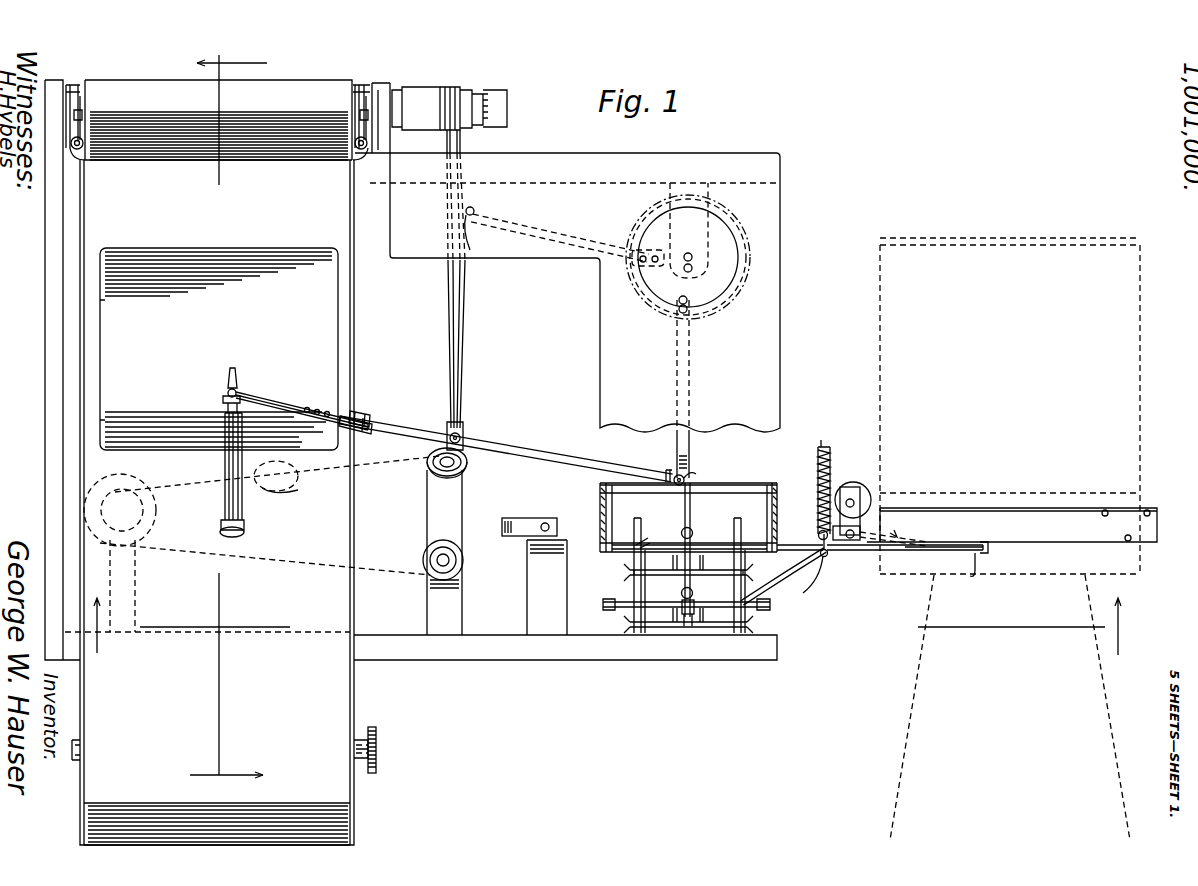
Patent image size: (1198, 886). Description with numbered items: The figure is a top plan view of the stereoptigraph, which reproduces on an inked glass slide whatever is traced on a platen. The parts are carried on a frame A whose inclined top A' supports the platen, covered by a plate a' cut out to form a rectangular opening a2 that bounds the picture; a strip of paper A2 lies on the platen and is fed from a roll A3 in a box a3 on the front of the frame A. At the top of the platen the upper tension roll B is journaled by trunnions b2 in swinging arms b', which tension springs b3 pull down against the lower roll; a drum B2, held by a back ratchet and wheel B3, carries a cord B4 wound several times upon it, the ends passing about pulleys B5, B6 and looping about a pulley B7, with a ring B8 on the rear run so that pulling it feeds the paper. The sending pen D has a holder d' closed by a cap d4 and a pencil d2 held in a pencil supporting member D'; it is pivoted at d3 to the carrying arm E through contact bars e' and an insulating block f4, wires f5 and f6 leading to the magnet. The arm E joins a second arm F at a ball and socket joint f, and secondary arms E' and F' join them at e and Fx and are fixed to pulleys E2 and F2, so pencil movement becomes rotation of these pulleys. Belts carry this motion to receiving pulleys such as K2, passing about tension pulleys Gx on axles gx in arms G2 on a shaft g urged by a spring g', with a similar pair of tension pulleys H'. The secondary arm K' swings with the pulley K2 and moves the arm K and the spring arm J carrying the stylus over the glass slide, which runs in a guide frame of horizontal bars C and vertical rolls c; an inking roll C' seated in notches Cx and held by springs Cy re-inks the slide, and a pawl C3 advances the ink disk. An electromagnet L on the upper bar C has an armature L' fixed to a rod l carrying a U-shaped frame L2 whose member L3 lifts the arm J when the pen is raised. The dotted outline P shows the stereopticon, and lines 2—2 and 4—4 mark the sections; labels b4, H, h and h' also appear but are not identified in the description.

The frame A is at (567, 371).
The inclined top A' is at (43, 370).
The strip of paper A2 is at (217, 502).
The paper roll A3 is at (143, 812).
The plate a' is at (154, 312).
The rectangular opening a2 is at (292, 232).
The box a3 is at (358, 703).
The upper tension roll B is at (218, 120).
The swinging arms b' is at (218, 98).
The trunnions b2 is at (354, 97).
The tension springs b3 is at (352, 135).
The roller journal b4 is at (353, 157).
The drum B2 is at (422, 104).
The back ratchet and wheel B3 is at (502, 97).
The cord B4 is at (462, 143).
The pulley B5 is at (428, 452).
The pulley B6 is at (425, 550).
The pulley B7 is at (84, 502).
The ring B8 is at (296, 484).
The horizontal bars C is at (1012, 503).
The inking roll C' is at (810, 511).
The pawl C3 is at (813, 408).
The notches Cx is at (825, 557).
The tension springs Cy is at (828, 467).
The vertical rolls c is at (1108, 511).
The sending pen D is at (198, 452).
The pencil supporting member D' is at (187, 375).
The holder d' is at (204, 466).
The pencil d2 is at (236, 378).
The pivot connection d3 is at (240, 395).
The cap d4 is at (246, 530).
The carrying arm E is at (505, 437).
The secondary supporting arm E' is at (695, 429).
The rotary member E2 is at (731, 213).
The ball and socket joint e is at (691, 465).
The contact bars e' is at (328, 401).
The second carrying arm F is at (464, 290).
The secondary supporting arm F' is at (567, 255).
The rotary member F2 is at (718, 317).
The ball and socket joint Fx is at (482, 214).
The ball and socket joint f is at (472, 431).
The insulating block f4 is at (357, 411).
The insulated wire f5 is at (690, 473).
The wire f6 is at (668, 476).
The arms G2 is at (750, 575).
The tension pulleys Gx is at (743, 607).
The shaft g is at (610, 559).
The tension spring g' is at (676, 658).
The axles gx is at (717, 610).
The frame H is at (683, 505).
The tension pulleys H' is at (645, 555).
The cross rail h is at (717, 505).
The vertical rod h' is at (696, 550).
The carrying arm J is at (972, 560).
The second carrying arm K is at (862, 577).
The secondary carrying arm K' is at (828, 599).
The rotary member K2 is at (637, 603).
The electromagnet L is at (853, 497).
The armature L' is at (871, 498).
The U-shaped wire frame L2 is at (895, 524).
The vertical member L3 is at (920, 544).
The vertical rod l is at (858, 533).
The stereopticon P is at (1120, 354).
The section line 2 is at (599, 597).
The section line 4 is at (238, 420).